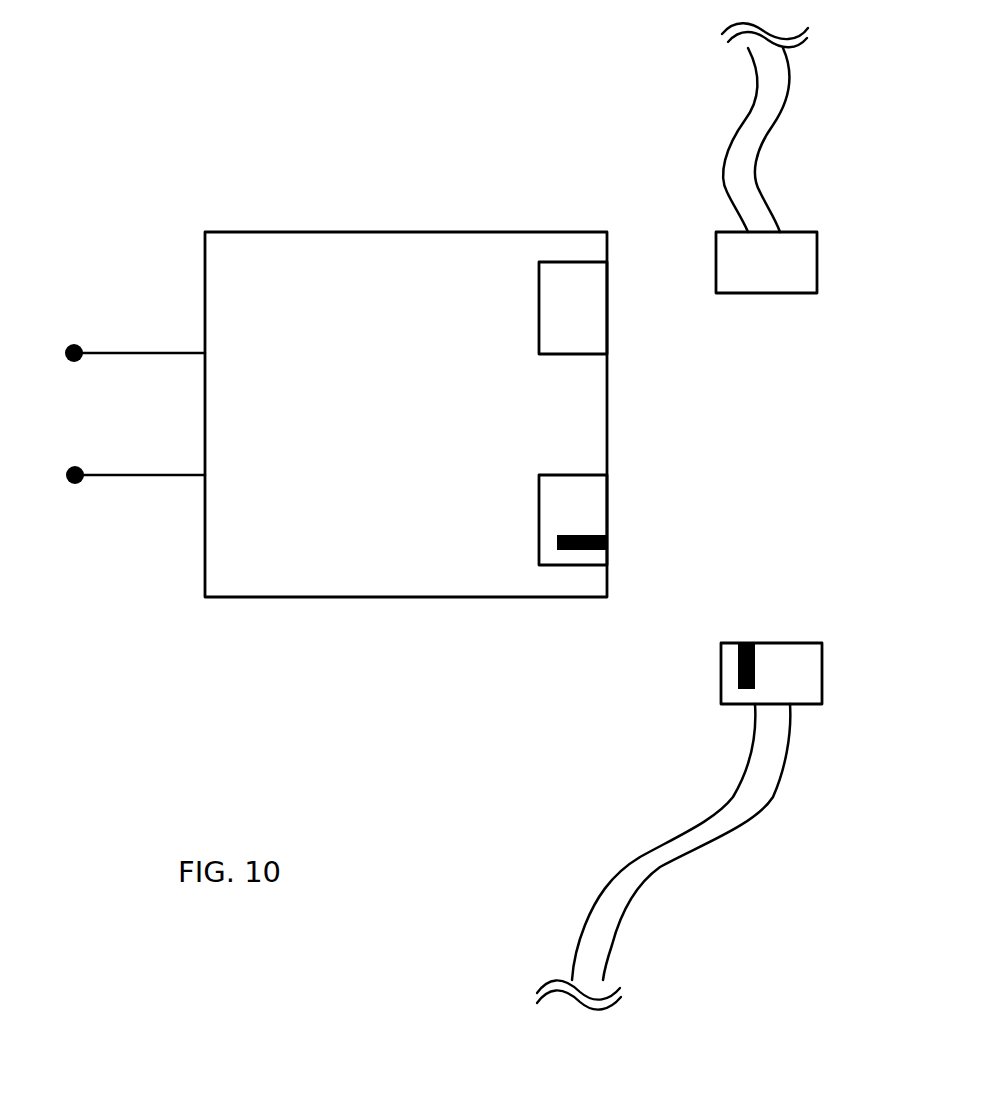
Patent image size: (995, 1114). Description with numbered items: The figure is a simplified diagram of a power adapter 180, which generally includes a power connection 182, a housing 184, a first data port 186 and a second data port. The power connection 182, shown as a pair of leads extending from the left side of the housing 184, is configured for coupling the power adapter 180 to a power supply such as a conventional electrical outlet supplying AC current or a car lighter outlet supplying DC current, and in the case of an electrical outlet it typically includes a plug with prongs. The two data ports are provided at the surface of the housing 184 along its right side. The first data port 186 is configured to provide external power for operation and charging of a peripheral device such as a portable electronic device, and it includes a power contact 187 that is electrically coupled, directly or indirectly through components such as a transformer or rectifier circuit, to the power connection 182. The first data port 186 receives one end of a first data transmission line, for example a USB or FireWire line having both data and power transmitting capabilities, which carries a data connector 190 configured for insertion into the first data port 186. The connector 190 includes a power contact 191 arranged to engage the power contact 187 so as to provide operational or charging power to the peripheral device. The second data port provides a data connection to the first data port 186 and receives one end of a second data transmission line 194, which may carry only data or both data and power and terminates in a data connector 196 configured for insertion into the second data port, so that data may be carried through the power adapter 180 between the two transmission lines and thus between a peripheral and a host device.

The power adapter 180 is at (185, 160).
The power connection 182 is at (122, 353).
The housing 184 is at (503, 231).
The first data port 186 is at (590, 505).
The power contact 187 is at (612, 546).
The data connector 190 is at (720, 689).
The power contact 191 is at (745, 642).
The second data transmission line 194 is at (740, 118).
The data connector 196 is at (785, 280).